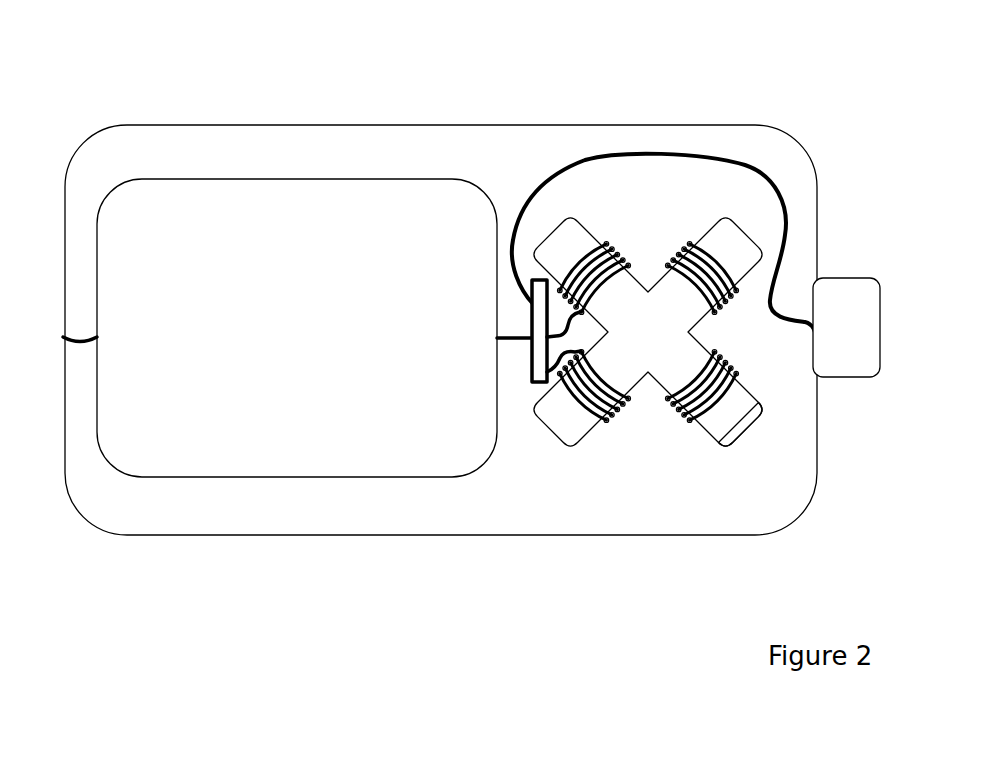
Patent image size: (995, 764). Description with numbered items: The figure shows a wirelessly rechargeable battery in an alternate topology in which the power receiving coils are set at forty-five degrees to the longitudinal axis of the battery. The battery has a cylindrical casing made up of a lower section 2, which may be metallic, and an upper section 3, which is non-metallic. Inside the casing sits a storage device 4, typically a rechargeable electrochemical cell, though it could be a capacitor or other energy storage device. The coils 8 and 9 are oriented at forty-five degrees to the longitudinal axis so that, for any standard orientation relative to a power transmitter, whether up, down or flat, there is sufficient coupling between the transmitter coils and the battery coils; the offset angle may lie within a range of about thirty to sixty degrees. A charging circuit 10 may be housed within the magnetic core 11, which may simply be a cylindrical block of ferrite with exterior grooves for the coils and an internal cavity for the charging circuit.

The lower section 2 is at (190, 125).
The upper section 3 is at (722, 125).
The storage device 4 is at (338, 200).
The coil 8 is at (672, 404).
The coil 9 is at (713, 313).
The charging circuit 10 is at (532, 384).
The magnetic core 11 is at (748, 435).